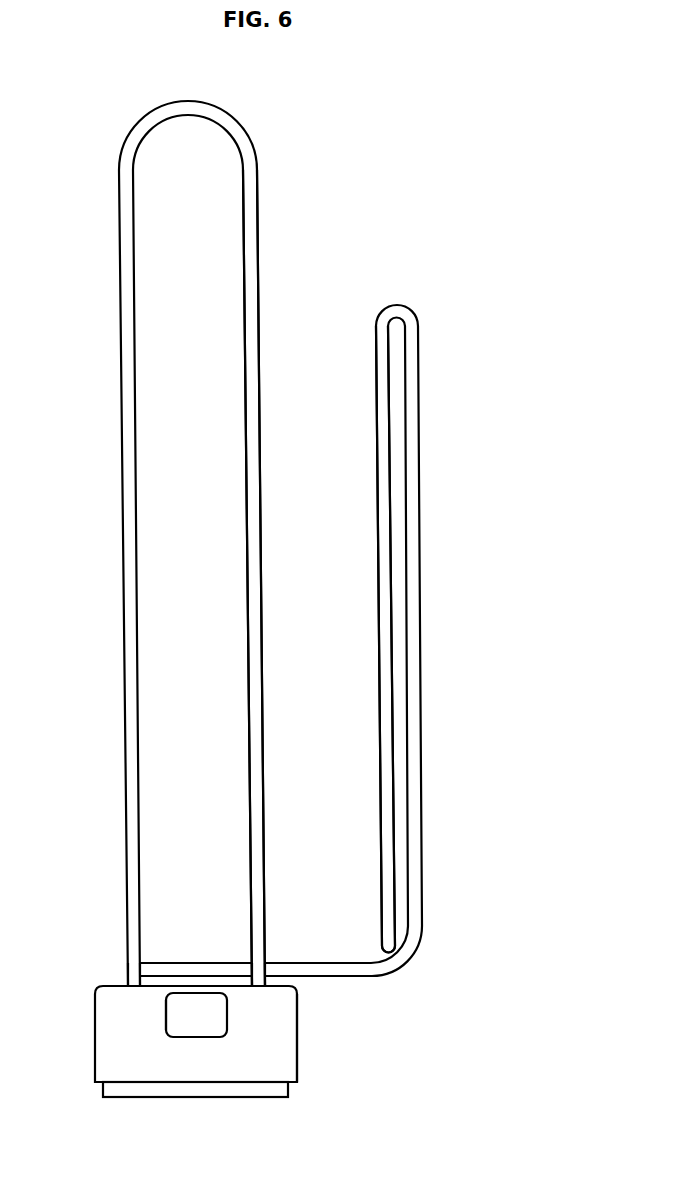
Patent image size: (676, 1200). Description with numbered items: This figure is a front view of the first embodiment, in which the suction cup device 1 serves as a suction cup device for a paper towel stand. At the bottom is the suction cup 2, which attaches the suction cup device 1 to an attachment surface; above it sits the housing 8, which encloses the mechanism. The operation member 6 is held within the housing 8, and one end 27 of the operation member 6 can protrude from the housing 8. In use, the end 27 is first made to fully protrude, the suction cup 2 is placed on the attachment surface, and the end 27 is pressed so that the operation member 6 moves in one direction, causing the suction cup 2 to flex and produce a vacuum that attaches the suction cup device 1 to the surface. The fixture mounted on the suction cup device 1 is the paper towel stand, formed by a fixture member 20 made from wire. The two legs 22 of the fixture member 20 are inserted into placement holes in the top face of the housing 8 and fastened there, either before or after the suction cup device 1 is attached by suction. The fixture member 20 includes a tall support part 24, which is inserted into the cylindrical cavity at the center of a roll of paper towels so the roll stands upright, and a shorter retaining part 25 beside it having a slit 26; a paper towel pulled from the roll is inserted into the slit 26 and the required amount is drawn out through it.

The suction cup device 1 is at (95, 1036).
The suction cup 2 is at (260, 1088).
The operation member 6 is at (178, 1008).
The housing 8 is at (288, 1043).
The fixture member 20 is at (123, 430).
The legs 22 is at (133, 982).
The support part 24 is at (251, 255).
The retaining part 25 is at (412, 470).
The slit 26 is at (398, 572).
The end 27 is at (197, 1018).